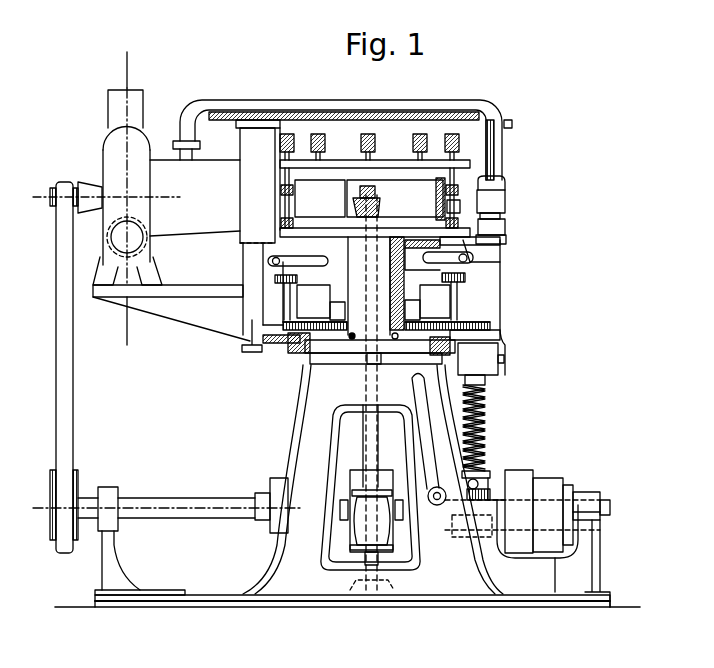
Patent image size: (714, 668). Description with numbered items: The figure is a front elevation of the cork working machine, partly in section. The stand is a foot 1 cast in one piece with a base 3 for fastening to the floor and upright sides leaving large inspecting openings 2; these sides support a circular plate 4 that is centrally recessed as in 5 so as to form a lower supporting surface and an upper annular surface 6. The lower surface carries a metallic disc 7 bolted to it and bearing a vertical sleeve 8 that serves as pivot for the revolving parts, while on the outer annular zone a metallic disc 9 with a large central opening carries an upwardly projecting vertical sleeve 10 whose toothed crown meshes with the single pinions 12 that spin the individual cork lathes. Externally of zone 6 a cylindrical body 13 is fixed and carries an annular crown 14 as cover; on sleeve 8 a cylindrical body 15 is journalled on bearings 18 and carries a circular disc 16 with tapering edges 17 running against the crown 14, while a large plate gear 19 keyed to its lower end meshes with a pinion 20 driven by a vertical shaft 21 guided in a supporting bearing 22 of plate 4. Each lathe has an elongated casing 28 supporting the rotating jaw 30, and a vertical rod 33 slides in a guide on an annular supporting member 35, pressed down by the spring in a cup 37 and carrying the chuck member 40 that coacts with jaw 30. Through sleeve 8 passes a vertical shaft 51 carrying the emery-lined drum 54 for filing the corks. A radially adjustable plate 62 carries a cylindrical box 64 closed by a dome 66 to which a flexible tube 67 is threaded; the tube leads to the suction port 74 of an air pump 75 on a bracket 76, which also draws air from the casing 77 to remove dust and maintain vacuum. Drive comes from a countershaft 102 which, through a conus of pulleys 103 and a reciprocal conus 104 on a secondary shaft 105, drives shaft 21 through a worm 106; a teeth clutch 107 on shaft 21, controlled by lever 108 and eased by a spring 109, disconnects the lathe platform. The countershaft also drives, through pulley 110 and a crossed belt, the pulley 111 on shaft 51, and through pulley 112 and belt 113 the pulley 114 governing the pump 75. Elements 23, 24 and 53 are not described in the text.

The foot or sock 1 is at (311, 432).
The inspecting openings 2 is at (350, 447).
The base 3 is at (236, 607).
The circular plate 4 is at (290, 345).
The central recess 5 is at (306, 348).
The upper supporting surface 6 is at (284, 340).
The metallic disc 7 is at (338, 349).
The vertical sleeve 8 is at (377, 392).
The metallic disc 9 is at (256, 348).
The vertical sleeve 10 is at (373, 301).
The pinion 12 is at (280, 277).
The cylindrical body 13 is at (243, 339).
The annular crown 14 is at (485, 245).
The cylindrical body 15 is at (422, 261).
The circular disc 16 is at (428, 245).
The tapering edges 17 is at (470, 250).
The bearings 18 is at (369, 286).
The plate gear 19 is at (394, 309).
The pinion 20 is at (490, 326).
The vertical shaft 21 is at (484, 393).
The supporting bearing 22 is at (480, 367).
The bolt 23 is at (350, 340).
The link 24 is at (472, 255).
The elongated casing 28 is at (494, 238).
The rotating jaw 30 is at (470, 222).
The vertical rod 33 is at (283, 193).
The annular supporting member 35 is at (348, 170).
The cylindrical cup 37 is at (312, 154).
The chuck member 40 is at (508, 178).
The vertical shaft 51 is at (382, 360).
The box 53 is at (396, 199).
The pulley or drum 54 is at (425, 190).
The plate 62 is at (500, 216).
The cylindrical box 64 is at (499, 205).
The dome 66 is at (497, 187).
The flexible tube 67 is at (315, 83).
The suction port 74 is at (204, 172).
The air pump 75 is at (141, 150).
The supporting bracket 76 is at (176, 318).
The casing 77 is at (512, 126).
The countershaft 102 is at (172, 500).
The conus of pulleys 103 is at (571, 483).
The reciprocal conus 104 is at (565, 500).
The secondary horizontal shaft 105 is at (507, 550).
The worm 106 is at (492, 496).
The teeth clutch 107 is at (482, 483).
The lever 108 is at (416, 403).
The spring 109 is at (486, 420).
The pulley 110 is at (362, 484).
The pulley 111 is at (384, 537).
The pulley 112 is at (53, 545).
The belt 113 is at (74, 400).
The pulley 114 is at (50, 195).